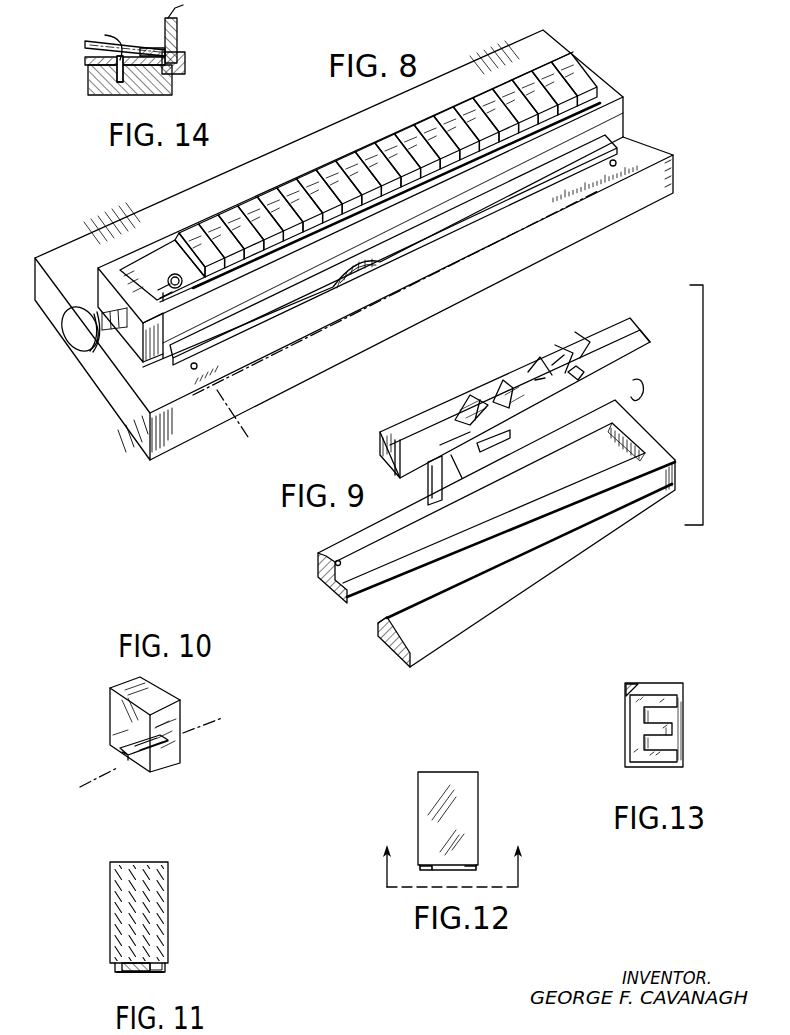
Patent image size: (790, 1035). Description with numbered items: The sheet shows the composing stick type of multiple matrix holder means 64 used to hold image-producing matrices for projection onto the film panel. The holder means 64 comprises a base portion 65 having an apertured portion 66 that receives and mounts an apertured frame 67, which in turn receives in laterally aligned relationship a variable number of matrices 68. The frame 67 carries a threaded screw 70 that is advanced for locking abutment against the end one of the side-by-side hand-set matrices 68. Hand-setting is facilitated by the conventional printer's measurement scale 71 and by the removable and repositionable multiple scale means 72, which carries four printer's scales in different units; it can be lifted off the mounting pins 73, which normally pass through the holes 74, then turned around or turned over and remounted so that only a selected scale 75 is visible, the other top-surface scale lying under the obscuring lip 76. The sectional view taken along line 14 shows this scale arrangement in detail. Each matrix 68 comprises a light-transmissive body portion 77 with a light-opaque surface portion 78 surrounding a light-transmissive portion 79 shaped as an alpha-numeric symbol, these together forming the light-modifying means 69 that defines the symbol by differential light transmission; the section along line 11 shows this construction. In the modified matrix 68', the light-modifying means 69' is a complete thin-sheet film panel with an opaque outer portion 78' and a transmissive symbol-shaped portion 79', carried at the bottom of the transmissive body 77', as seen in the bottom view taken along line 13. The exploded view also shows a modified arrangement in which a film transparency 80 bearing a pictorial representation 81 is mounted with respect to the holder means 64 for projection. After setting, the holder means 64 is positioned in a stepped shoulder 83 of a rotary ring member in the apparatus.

In FIG. 8, the section line 14- 14 is at (164, 329).
In FIG. 8, the multiple matrix holder means 64 is at (177, 455).
In FIG. 9, the multiple matrix holder means 64 is at (433, 660).
In FIG. 14, the multiple matrix holder means 64 is at (85, 95).
In FIG. 8, the base portion 65 is at (563, 237).
In FIG. 9, the base portion 65 is at (555, 558).
In FIG. 14, the base portion 65 is at (87, 82).
In FIG. 8, the apertured portion 66 is at (133, 355).
In FIG. 9, the apertured portion 66 is at (374, 568).
In FIG. 14, the apertured portion 66 is at (180, 62).
In FIG. 8, the apertured frame 67 is at (266, 260).
In FIG. 9, the apertured frame 67 is at (453, 487).
In FIG. 14, the apertured frame 67 is at (165, 25).
In FIG. 8, the matrix 68 is at (598, 59).
In FIG. 10, the matrix 68 is at (130, 709).
In FIG. 11, the matrix 68 is at (165, 890).
In FIG. 12, the modified matrix 68' is at (461, 797).
In FIG. 13, the modified matrix 68' is at (638, 696).
In FIG. 10, the light-modifying means 69 is at (115, 753).
In FIG. 11, the light-modifying means 69 is at (116, 988).
In FIG. 12, the light-modifying means 69' is at (420, 889).
In FIG. 13, the light-modifying means 69' is at (619, 733).
In FIG. 8, the threaded screw 70 is at (92, 352).
In FIG. 8, the printer's measurement scale 71 is at (293, 153).
In FIG. 8, the multiple scale means 72 is at (450, 257).
In FIG. 14, the multiple scale means 72 is at (83, 53).
In FIG. 8, the mounting pins 73 is at (617, 161).
In FIG. 14, the mounting pins 73 is at (102, 36).
In FIG. 8, the holes 74 is at (617, 165).
In FIG. 14, the holes 74 is at (110, 72).
In FIG. 8, the selected scale 75 is at (201, 390).
In FIG. 8, the obscuring lip 76 is at (237, 323).
In FIG. 14, the obscuring lip 76 is at (143, 48).
In FIG. 10, the light-transmissive body portion 77 is at (167, 710).
In FIG. 11, the light-transmissive body portion 77 is at (183, 900).
In FIG. 12, the light-transmissive body 77' is at (496, 775).
In FIG. 11, the light-opaque surface portion 78 is at (164, 965).
In FIG. 13, the opaque outer portion 78' is at (674, 708).
In FIG. 11, the light-transmissive portion 79 is at (146, 981).
In FIG. 13, the light-transmissive portion 79' is at (675, 775).
In FIG. 9, the film transparency 80 is at (520, 384).
In FIG. 9, the pictorial representation 81 is at (573, 367).
In FIG. 9, the stepped shoulder 83 is at (620, 372).
In FIG. 10, the section line 11- 11 is at (93, 786).
In FIG. 12, the section line 13- 13 is at (455, 855).